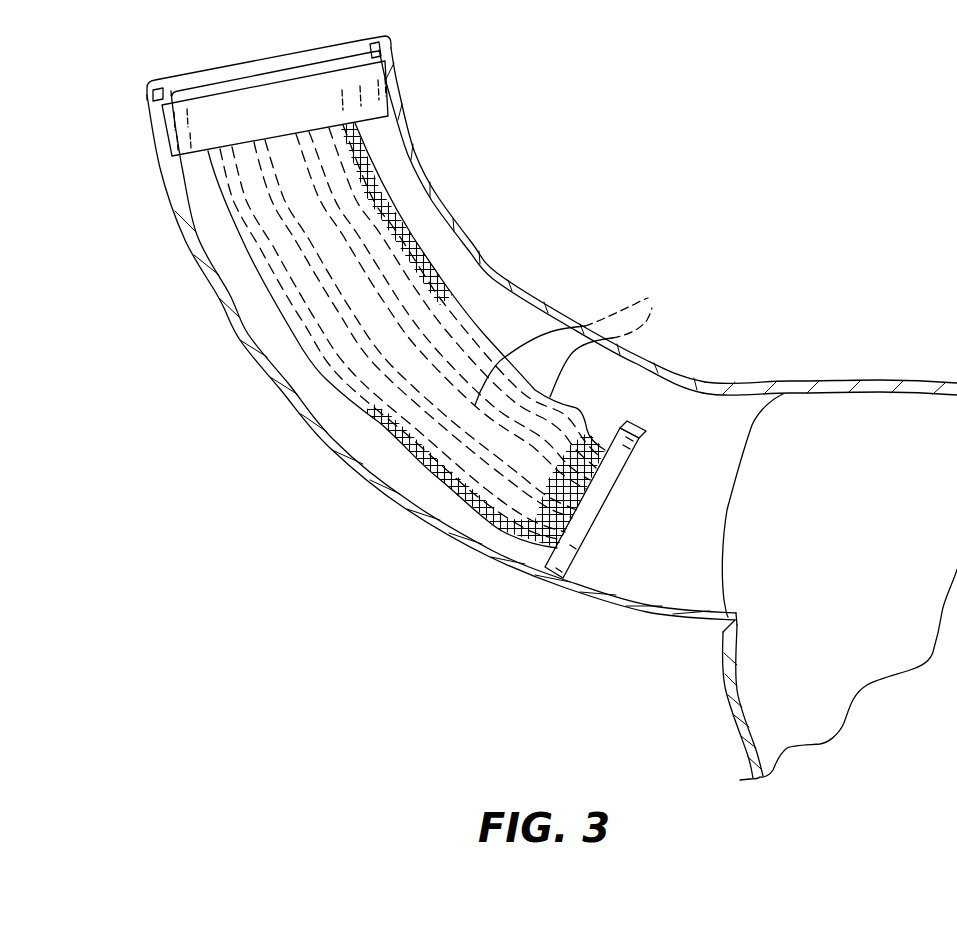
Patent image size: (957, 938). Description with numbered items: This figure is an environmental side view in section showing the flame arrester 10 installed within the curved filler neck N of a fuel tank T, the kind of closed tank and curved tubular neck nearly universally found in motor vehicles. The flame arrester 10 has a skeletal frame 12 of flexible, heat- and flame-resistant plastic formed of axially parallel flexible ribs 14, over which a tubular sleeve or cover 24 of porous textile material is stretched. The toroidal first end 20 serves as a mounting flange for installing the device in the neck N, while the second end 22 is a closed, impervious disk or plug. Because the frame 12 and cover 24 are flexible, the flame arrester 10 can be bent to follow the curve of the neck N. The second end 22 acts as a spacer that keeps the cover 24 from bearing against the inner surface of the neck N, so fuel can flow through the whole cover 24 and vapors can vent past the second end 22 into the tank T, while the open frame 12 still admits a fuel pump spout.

The flame arrester 10 is at (404, 302).
The skeletal frame 12 is at (463, 315).
The ribs 14 is at (571, 340).
The first end 20 is at (230, 91).
The second end 22 is at (602, 510).
The tubular sleeve or cover 24 is at (365, 168).
The filler neck N is at (313, 426).
The fuel tank T is at (904, 381).